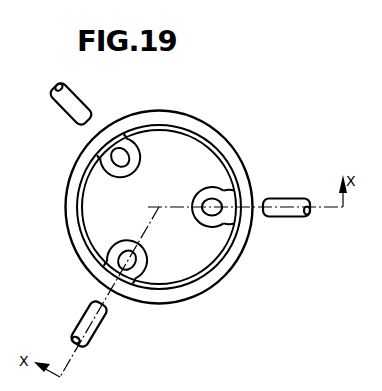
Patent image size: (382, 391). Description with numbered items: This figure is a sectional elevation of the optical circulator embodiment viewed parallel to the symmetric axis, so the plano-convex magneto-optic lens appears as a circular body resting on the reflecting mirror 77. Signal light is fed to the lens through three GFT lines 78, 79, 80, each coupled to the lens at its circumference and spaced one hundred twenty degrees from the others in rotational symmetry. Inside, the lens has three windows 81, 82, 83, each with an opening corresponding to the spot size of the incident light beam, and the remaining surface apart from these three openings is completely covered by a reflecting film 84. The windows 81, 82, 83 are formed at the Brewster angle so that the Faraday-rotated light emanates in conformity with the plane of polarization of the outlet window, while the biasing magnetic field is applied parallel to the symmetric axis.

The reflecting mirror 77 is at (64, 212).
The GFT line 78 is at (90, 306).
The GFT line 79 is at (294, 174).
The GFT line 80 is at (77, 93).
The window 81 is at (130, 263).
The window 82 is at (215, 215).
The window 83 is at (120, 157).
The reflecting film 84 is at (190, 162).